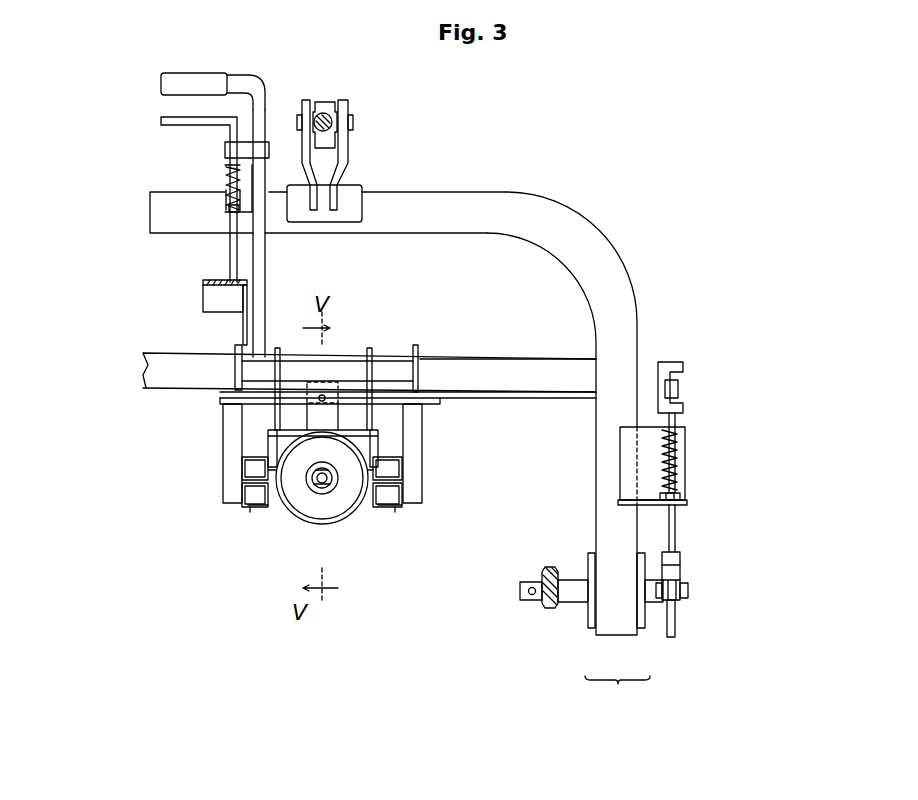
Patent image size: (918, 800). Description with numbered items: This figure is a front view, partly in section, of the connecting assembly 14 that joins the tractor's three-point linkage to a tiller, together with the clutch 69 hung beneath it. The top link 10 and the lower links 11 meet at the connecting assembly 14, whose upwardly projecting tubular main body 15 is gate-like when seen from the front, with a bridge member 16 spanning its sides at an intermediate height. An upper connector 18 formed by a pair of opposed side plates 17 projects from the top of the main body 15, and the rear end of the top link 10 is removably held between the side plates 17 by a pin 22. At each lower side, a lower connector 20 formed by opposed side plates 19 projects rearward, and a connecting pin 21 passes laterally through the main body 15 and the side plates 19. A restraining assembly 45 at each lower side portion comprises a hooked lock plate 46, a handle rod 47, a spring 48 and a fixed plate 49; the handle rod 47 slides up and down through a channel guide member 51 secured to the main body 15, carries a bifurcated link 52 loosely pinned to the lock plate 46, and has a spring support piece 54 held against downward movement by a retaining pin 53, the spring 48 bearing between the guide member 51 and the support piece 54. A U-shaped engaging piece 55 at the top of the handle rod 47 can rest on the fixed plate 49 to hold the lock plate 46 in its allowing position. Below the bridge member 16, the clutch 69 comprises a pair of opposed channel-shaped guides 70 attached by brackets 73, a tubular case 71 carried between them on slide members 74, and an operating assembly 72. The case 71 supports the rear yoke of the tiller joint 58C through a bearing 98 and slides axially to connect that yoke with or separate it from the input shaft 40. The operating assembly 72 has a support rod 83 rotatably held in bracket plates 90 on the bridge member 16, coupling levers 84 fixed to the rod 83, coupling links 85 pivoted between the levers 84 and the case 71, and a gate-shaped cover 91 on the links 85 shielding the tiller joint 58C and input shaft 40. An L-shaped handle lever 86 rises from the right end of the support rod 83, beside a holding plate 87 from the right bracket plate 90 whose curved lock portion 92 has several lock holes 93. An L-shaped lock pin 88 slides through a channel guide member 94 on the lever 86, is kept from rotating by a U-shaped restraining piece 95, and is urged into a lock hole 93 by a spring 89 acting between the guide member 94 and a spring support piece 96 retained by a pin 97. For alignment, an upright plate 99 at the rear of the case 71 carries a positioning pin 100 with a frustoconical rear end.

The top link 10 is at (330, 126).
The lower link 11 is at (553, 608).
The connecting assembly 14 is at (616, 260).
The tubular main body 15 is at (516, 210).
The bridge member 16 is at (494, 357).
The side plates 17 is at (308, 98).
The upper connector 18 is at (305, 57).
The side plates 19 is at (592, 630).
The lower connector 20 is at (617, 694).
The connecting pin 21 is at (524, 600).
The pin 22 is at (353, 121).
The input shaft 40 is at (332, 490).
The restraining assembly 45 is at (698, 490).
The hooked lock plate 46 is at (678, 622).
The handle rod 47 is at (677, 528).
The spring 48 is at (680, 460).
The fixed plate 49 is at (672, 397).
The channel guide member 51 is at (627, 470).
The bifurcated link 52 is at (683, 572).
The retaining pin 53 is at (668, 502).
The spring support piece 54 is at (668, 498).
The U-shaped engaging piece 55 is at (669, 360).
The tiller joint 58C is at (330, 500).
The clutch 69 is at (274, 522).
The guides 70 is at (250, 507).
The tubular case 71 is at (297, 512).
The operating assembly 72 is at (268, 282).
The brackets 73 is at (225, 455).
The slide members 74 is at (245, 492).
The support rod 83 is at (352, 365).
The coupling levers 84 is at (280, 348).
The coupling links 85 is at (268, 452).
The handle lever 86 is at (258, 85).
The holding plate 87 is at (243, 333).
The lock pin 88 is at (232, 255).
The spring 89 is at (228, 178).
The bracket plates 90 is at (235, 372).
The gate-shaped cover 91 is at (375, 445).
The lock portion 92 is at (203, 282).
The lock holes 93 is at (232, 288).
The channel guide member 94 is at (255, 205).
The U-shaped restraining piece 95 is at (266, 147).
The spring support piece 96 is at (228, 203).
The pin 97 is at (232, 210).
The bearing 98 is at (308, 513).
The upright plate 99 is at (365, 408).
The positioning pin 100 is at (322, 395).